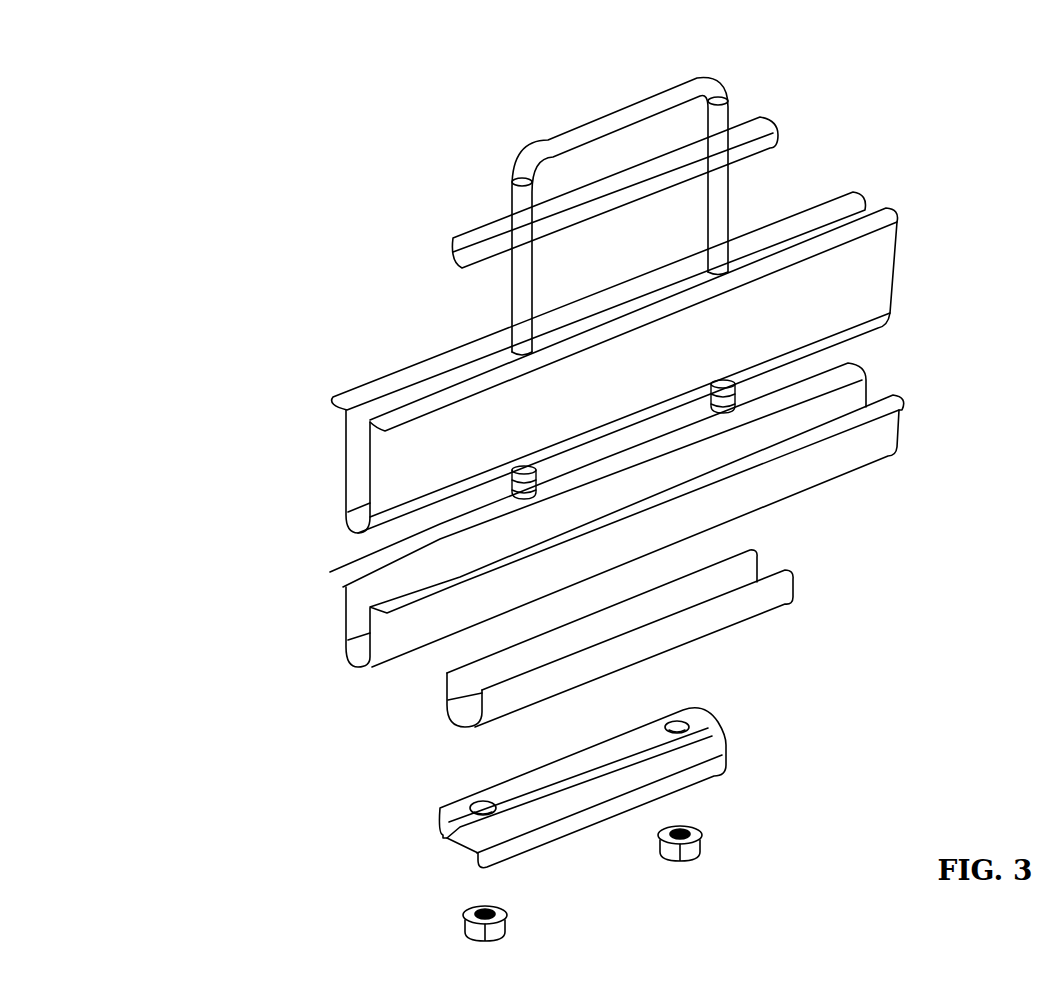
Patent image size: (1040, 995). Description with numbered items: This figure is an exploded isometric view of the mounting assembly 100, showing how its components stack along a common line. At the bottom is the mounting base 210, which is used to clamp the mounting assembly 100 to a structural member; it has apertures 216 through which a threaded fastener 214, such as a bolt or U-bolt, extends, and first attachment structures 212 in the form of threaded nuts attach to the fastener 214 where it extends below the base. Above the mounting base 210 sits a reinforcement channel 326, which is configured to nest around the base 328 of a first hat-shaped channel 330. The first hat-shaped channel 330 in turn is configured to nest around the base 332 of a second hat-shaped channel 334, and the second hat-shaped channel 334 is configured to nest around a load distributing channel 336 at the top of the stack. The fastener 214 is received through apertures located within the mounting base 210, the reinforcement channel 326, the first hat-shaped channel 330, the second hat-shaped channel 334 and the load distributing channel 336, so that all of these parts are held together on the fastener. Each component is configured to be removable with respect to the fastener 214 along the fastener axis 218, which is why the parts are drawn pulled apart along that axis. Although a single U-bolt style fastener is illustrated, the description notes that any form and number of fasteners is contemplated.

The mounting assembly 100 is at (258, 595).
The mounting base 210 is at (663, 747).
The first attachment structure 212 is at (704, 852).
The fastener 214 is at (730, 398).
The aperture 216 is at (700, 722).
The fastener axis 218 is at (521, 186).
The reinforcement channel 326 is at (795, 583).
The base of first hat-shaped channel 328 is at (367, 670).
The first hat-shaped channel 330 is at (651, 589).
The base of second hat-shaped channel 332 is at (340, 507).
The second hat-shaped channel 334 is at (560, 362).
The load distributing channel 336 is at (762, 117).